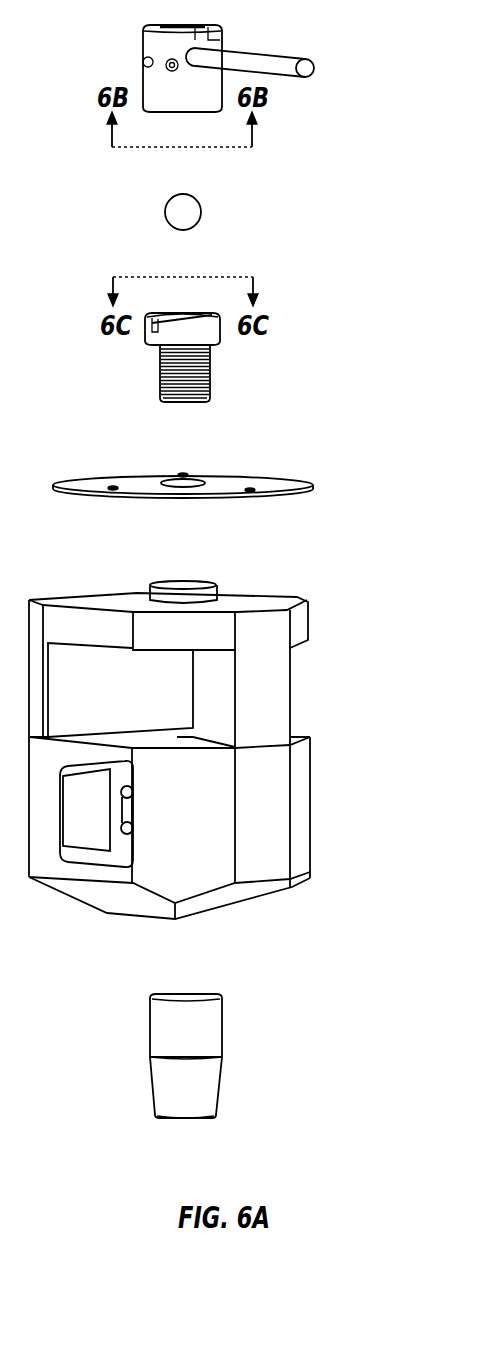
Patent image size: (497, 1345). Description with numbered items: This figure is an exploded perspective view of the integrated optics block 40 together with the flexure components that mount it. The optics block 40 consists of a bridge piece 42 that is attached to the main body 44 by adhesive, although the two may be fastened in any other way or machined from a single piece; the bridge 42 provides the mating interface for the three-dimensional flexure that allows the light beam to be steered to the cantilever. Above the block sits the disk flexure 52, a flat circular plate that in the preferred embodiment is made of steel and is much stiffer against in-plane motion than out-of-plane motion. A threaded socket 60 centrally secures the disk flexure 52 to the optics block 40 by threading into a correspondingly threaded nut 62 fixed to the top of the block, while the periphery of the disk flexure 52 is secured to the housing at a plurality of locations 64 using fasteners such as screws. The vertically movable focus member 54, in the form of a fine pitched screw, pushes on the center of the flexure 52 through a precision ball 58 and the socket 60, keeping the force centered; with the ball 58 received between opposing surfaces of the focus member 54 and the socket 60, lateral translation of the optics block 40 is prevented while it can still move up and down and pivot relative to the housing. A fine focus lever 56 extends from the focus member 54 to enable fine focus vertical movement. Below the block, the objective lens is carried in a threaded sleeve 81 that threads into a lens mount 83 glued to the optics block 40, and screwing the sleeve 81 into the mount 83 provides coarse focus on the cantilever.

The integrated optics block 40 is at (203, 754).
The bridge piece 42 is at (300, 623).
The main body 44 is at (303, 800).
The disk flexure 52 is at (167, 477).
The vertically movable focus member 54 is at (143, 47).
The fine focus lever 56 is at (258, 50).
The precision ball 58 is at (190, 212).
The threaded socket 60 is at (210, 383).
The threaded nut 62 is at (183, 580).
The peripheral securing locations 64 is at (106, 487).
The threaded sleeve 81 is at (208, 1092).
The lens mount 83 is at (210, 1030).